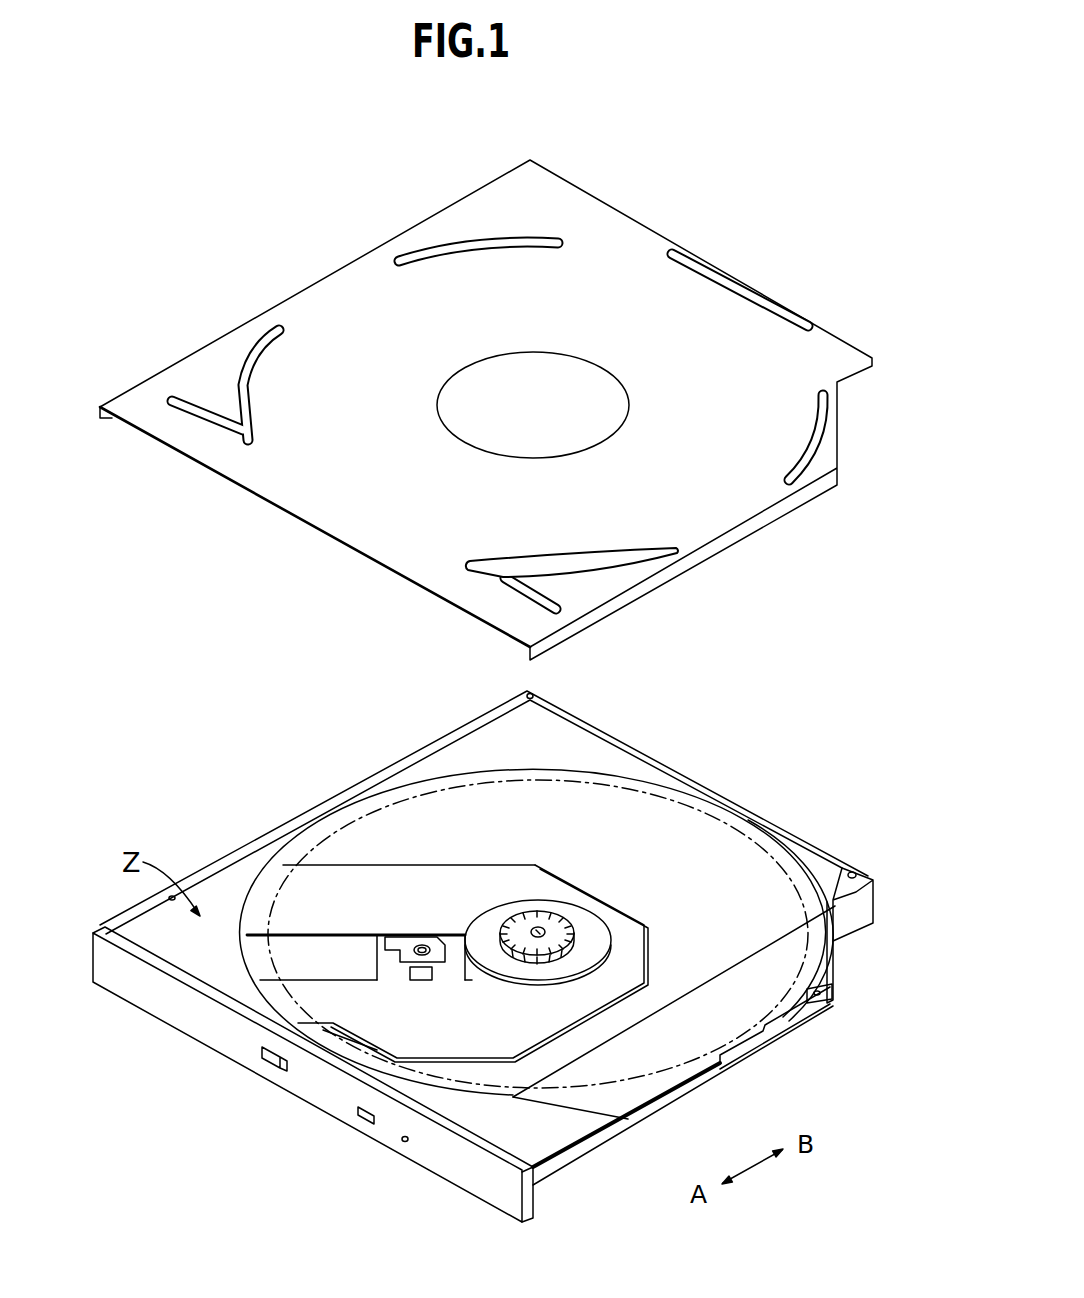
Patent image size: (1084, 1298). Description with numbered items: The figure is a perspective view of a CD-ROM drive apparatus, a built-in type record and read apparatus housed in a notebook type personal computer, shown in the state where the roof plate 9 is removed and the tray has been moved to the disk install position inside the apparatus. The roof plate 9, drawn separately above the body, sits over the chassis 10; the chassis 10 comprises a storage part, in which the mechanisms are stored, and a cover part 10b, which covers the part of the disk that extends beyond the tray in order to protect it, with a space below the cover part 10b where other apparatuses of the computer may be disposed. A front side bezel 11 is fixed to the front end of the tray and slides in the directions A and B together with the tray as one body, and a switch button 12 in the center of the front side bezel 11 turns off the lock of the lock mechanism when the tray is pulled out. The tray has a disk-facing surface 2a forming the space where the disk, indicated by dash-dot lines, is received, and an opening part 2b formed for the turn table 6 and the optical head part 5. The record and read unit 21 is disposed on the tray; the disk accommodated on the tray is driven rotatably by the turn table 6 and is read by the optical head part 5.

The roof plate 9 is at (708, 244).
The chassis 10 is at (240, 847).
The cover part 10b is at (572, 1165).
The front side bezel 11 is at (398, 144).
The switch button 12 is at (270, 1063).
The disk-facing surface 2a is at (542, 803).
The opening part 2b is at (480, 877).
The record and read unit 21 is at (438, 897).
The turn table 6 is at (580, 917).
The optical head part 5 is at (392, 975).